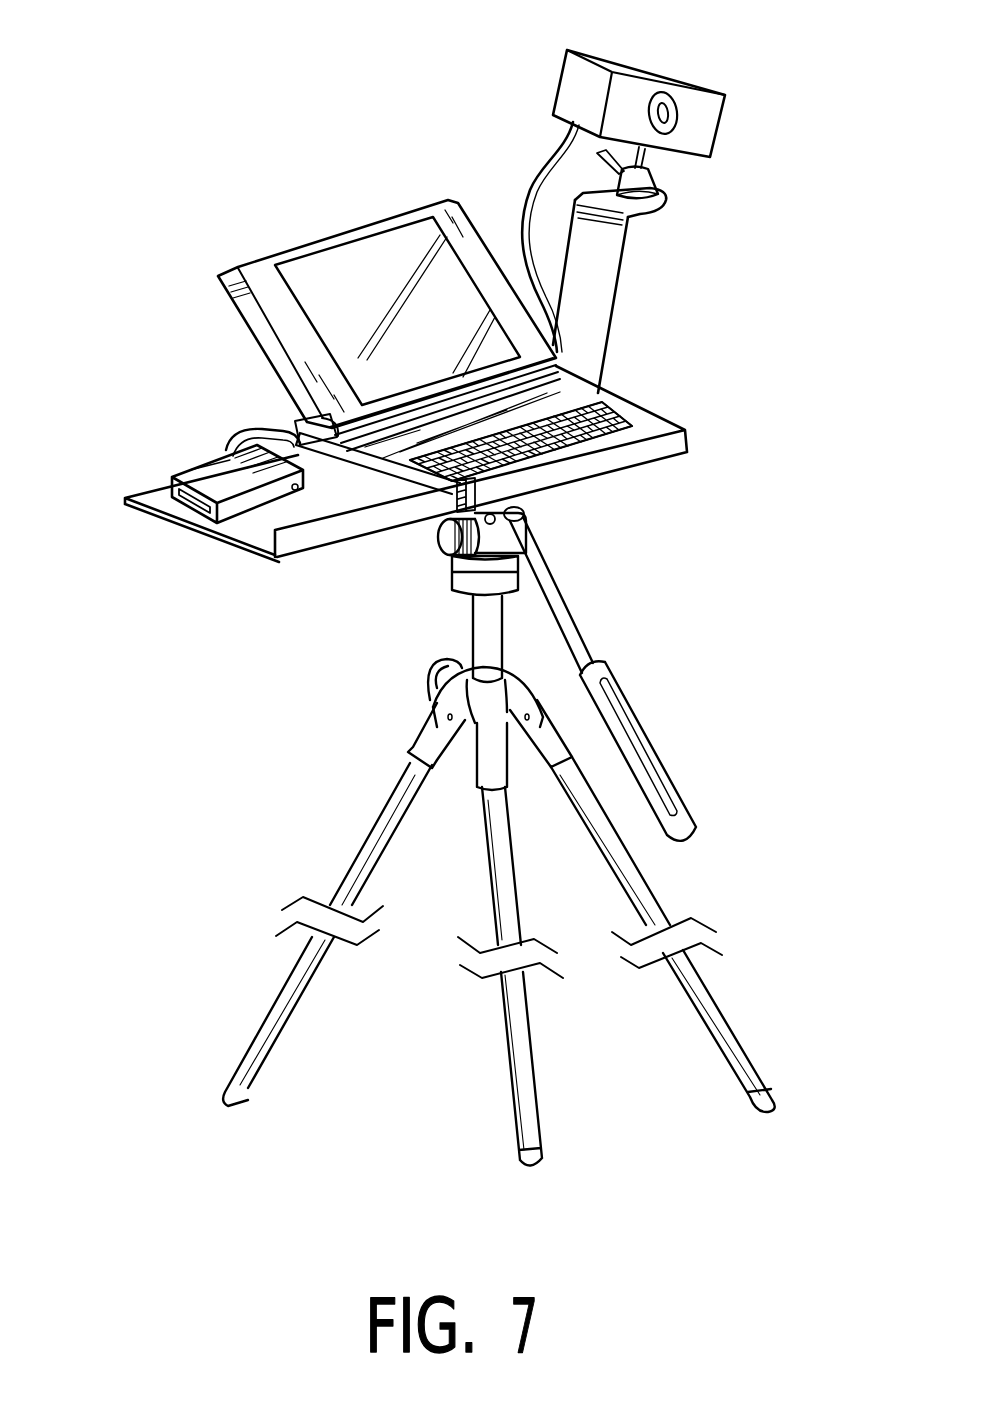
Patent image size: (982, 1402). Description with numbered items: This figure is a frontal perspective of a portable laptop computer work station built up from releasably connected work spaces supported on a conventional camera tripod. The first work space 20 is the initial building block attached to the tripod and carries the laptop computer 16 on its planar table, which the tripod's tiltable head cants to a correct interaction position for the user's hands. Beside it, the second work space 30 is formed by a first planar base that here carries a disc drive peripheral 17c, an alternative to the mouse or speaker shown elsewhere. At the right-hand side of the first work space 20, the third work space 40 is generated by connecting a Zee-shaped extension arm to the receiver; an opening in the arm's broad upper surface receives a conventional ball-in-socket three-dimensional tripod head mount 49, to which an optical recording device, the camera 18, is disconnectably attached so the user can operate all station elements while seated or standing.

The camera 18 is at (690, 85).
The laptop computer 16 is at (447, 198).
The work space 40 is at (741, 154).
The 3-d tripod head mount 49 is at (661, 181).
The work space 20 is at (491, 337).
The disc drive peripheral 17c is at (198, 466).
The work space 30 is at (163, 462).